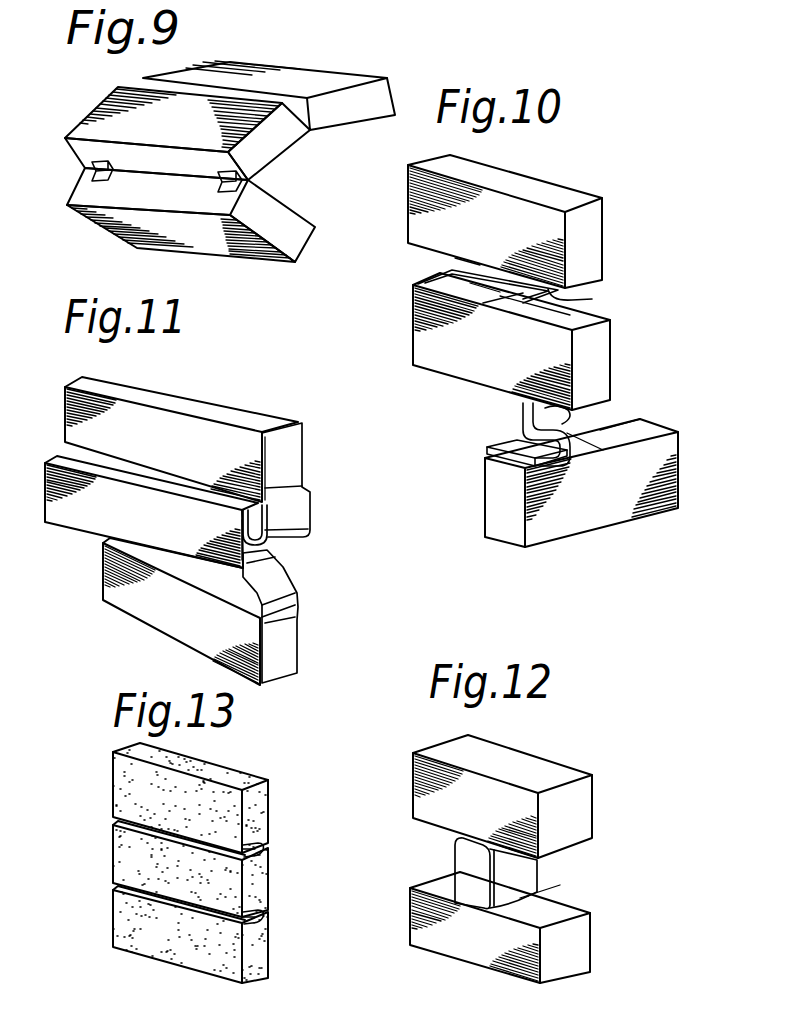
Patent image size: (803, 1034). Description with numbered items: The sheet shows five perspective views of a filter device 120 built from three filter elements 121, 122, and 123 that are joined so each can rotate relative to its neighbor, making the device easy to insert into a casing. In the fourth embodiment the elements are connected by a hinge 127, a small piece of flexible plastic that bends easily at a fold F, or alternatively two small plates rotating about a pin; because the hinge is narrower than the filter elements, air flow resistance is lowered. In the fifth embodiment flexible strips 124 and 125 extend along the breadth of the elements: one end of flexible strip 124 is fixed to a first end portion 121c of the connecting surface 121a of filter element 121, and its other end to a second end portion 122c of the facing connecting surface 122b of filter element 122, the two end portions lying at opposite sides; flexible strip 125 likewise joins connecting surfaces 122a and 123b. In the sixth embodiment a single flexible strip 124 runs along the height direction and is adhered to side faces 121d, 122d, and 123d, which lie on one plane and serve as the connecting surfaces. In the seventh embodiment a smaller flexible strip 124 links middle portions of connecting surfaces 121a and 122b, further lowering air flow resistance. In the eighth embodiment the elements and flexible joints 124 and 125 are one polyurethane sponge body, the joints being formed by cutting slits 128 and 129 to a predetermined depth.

In FIG. 9, the filter device 120 is at (356, 68).
In FIG. 11, the filter device 120 is at (261, 399).
In FIG. 12, the filter device 120 is at (593, 768).
In FIG. 13, the filter device 120 is at (158, 968).
In FIG. 9, the filter element 121 is at (377, 107).
In FIG. 10, the filter element 121 is at (608, 256).
In FIG. 11, the filter element 121 is at (77, 382).
In FIG. 12, the filter element 121 is at (582, 832).
In FIG. 13, the filter element 121 is at (118, 775).
In FIG. 10, the connecting surface 121a is at (460, 260).
In FIG. 12, the connecting surface 121a is at (575, 850).
In FIG. 10, the first end portion 121c is at (552, 302).
In FIG. 11, the side face 121d is at (267, 446).
In FIG. 9, the filter element 122 is at (277, 148).
In FIG. 10, the filter element 122 is at (614, 366).
In FIG. 11, the filter element 122 is at (60, 529).
In FIG. 12, the filter element 122 is at (583, 958).
In FIG. 13, the filter element 122 is at (118, 853).
In FIG. 10, the connecting surface 122a is at (430, 371).
In FIG. 10, the connecting surface 122b is at (533, 311).
In FIG. 12, the connecting surface 122b is at (555, 917).
In FIG. 10, the second end portion 122c is at (458, 302).
In FIG. 11, the side face 122d is at (233, 538).
In FIG. 9, the filter element 123 is at (293, 233).
In FIG. 10, the filter element 123 is at (498, 507).
In FIG. 11, the filter element 123 is at (103, 583).
In FIG. 13, the filter element 123 is at (118, 917).
In FIG. 10, the connecting surface 123b is at (650, 432).
In FIG. 11, the side face 123d is at (265, 655).
In FIG. 10, the flexible strip 124 is at (450, 277).
In FIG. 11, the flexible strip 124 is at (290, 463).
In FIG. 12, the flexible strip 124 is at (490, 850).
In FIG. 13, the flexible strip 124 is at (267, 849).
In FIG. 10, the flexible strip 125 is at (500, 445).
In FIG. 13, the flexible strip 125 is at (267, 913).
In FIG. 9, the hinge 127 is at (240, 192).
In FIG. 13, the slit 128 is at (248, 843).
In FIG. 13, the slit 129 is at (250, 927).
In FIG. 9, the fold F is at (243, 175).